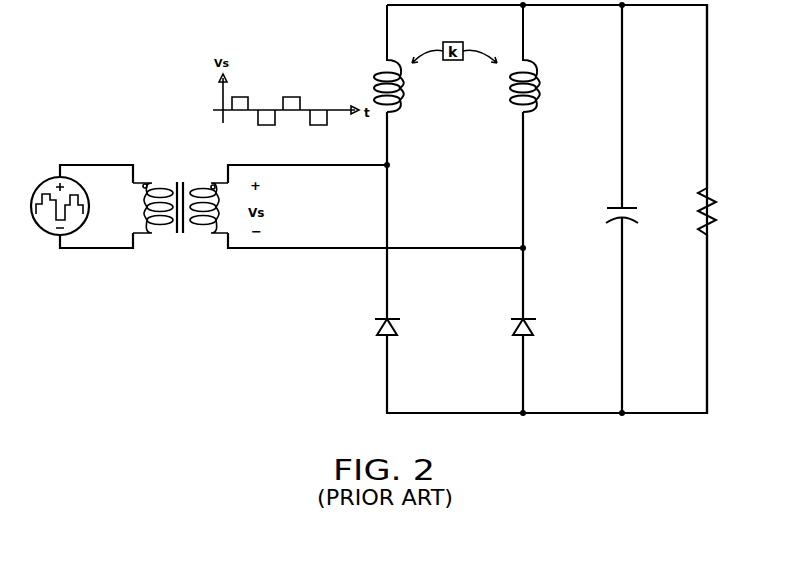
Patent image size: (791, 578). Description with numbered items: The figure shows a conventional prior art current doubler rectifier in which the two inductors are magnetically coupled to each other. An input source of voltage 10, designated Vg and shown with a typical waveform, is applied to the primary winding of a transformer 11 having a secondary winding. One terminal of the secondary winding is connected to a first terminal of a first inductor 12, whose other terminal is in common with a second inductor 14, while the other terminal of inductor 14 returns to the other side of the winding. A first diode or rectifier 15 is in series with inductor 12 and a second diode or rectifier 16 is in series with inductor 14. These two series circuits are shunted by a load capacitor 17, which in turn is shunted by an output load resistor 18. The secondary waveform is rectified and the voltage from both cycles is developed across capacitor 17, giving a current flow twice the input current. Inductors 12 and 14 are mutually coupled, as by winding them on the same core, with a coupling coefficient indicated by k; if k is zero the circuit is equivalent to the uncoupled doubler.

The input source of voltage 10 is at (50, 237).
The transformer 11 is at (195, 238).
The first inductor 12 is at (368, 82).
The second inductor 14 is at (510, 108).
The first diode or rectifier 15 is at (372, 325).
The second diode or rectifier 16 is at (537, 327).
The load capacitor 17 is at (607, 217).
The output load resistor 18 is at (713, 228).